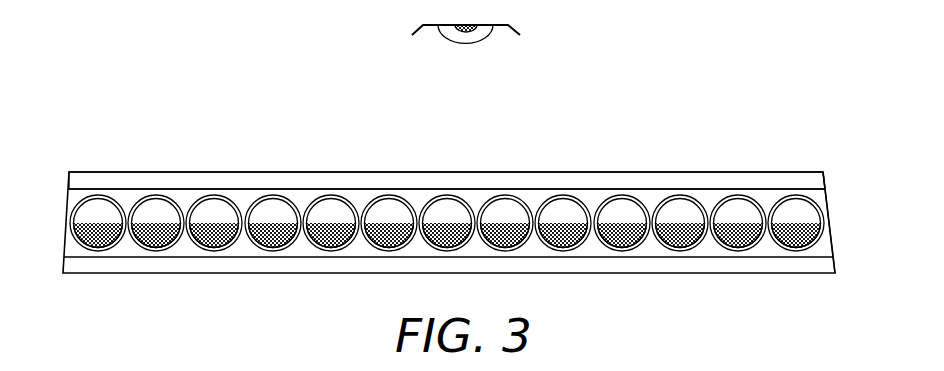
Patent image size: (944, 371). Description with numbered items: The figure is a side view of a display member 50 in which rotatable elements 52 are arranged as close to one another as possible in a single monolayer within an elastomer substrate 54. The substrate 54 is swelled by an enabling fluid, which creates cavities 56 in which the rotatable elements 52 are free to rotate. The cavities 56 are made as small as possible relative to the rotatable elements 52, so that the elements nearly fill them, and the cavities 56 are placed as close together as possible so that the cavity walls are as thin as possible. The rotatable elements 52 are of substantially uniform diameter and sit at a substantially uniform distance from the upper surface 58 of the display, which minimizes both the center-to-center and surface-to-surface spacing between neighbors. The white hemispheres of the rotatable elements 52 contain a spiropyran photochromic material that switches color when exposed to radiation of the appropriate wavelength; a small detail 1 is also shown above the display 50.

The reactant/fuel cell cartridge 1 is at (473, 27).
The display member 50 is at (162, 120).
The rotatable elements 52 is at (540, 205).
The elastomer substrate 54 is at (827, 199).
The cavities 56 is at (617, 197).
The upper surface 58 is at (275, 171).